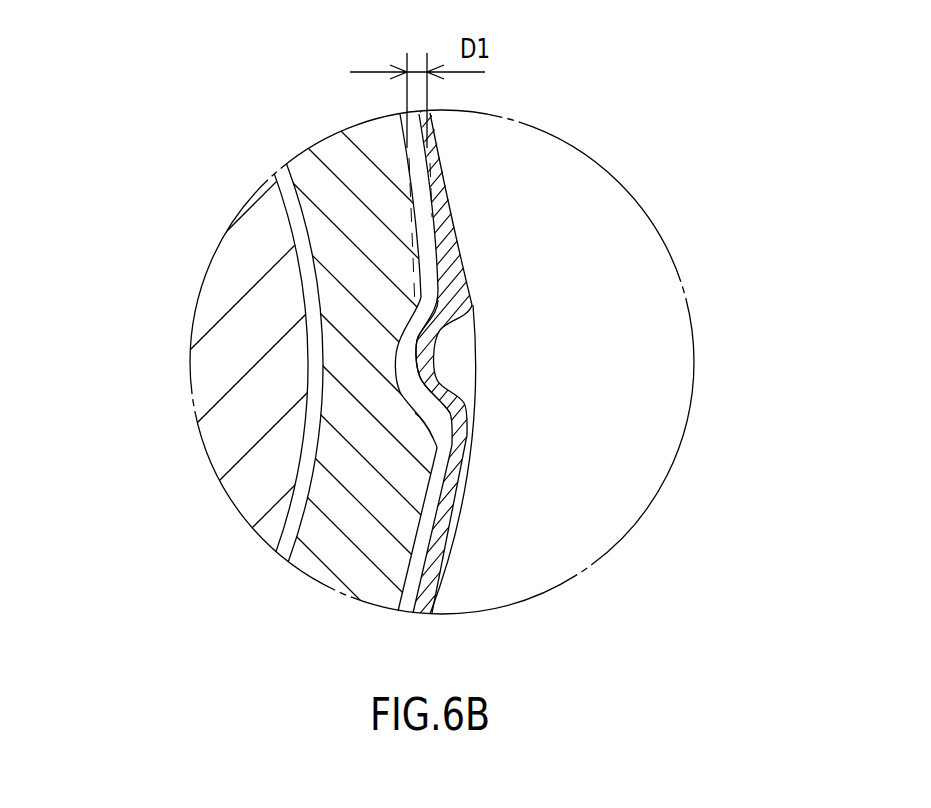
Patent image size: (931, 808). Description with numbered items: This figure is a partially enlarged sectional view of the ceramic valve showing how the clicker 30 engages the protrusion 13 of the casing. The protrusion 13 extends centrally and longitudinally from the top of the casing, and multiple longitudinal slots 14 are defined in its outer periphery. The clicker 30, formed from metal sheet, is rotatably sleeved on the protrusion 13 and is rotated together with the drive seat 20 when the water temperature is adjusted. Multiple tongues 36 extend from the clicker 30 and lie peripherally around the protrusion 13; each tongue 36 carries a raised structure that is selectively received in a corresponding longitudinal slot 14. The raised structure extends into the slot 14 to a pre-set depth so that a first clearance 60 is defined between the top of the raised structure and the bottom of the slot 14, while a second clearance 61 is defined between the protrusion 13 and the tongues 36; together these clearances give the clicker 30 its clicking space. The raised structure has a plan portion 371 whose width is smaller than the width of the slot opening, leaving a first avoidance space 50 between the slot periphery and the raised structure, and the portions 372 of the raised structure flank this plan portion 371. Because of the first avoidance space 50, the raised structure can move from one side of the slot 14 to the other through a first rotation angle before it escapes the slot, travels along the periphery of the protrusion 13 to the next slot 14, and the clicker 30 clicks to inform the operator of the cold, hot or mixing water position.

The protrusion 13 is at (337, 553).
The longitudinal slot 14 is at (413, 362).
The drive seat 20 is at (240, 254).
The clicker 30 is at (446, 225).
The tongue 36 is at (455, 488).
The plan portion 371 is at (423, 365).
The side wall of recess 372 is at (440, 323).
The first avoidance space 50 is at (432, 416).
The first clearance 60 is at (400, 328).
The second clearance 61 is at (434, 531).